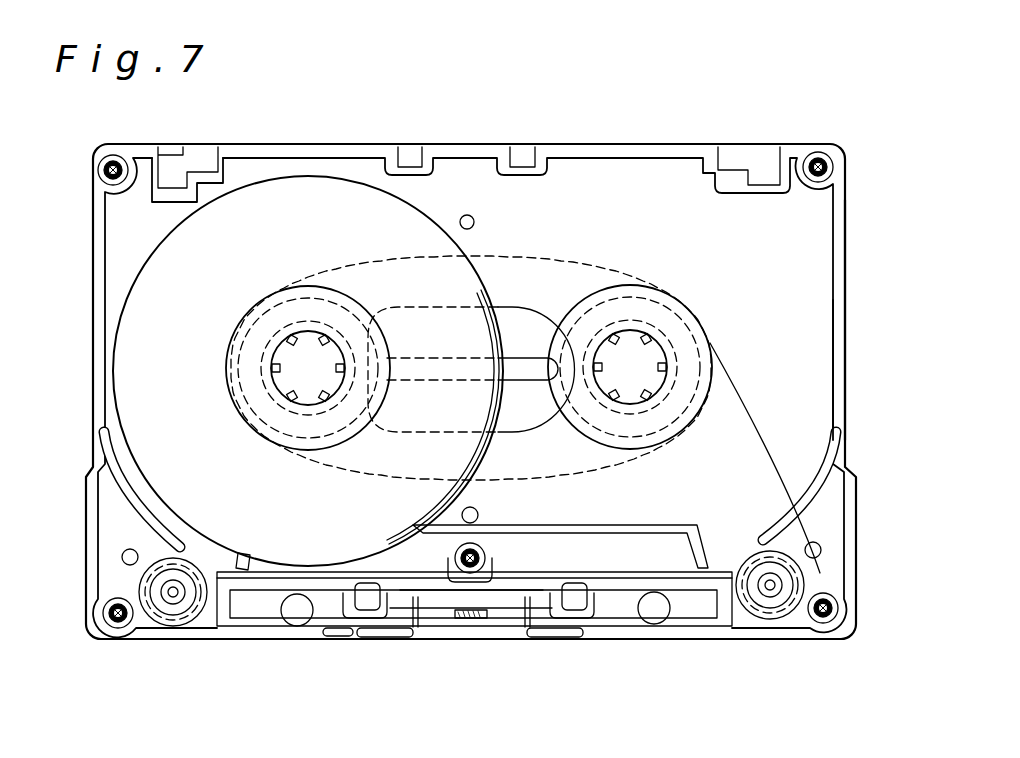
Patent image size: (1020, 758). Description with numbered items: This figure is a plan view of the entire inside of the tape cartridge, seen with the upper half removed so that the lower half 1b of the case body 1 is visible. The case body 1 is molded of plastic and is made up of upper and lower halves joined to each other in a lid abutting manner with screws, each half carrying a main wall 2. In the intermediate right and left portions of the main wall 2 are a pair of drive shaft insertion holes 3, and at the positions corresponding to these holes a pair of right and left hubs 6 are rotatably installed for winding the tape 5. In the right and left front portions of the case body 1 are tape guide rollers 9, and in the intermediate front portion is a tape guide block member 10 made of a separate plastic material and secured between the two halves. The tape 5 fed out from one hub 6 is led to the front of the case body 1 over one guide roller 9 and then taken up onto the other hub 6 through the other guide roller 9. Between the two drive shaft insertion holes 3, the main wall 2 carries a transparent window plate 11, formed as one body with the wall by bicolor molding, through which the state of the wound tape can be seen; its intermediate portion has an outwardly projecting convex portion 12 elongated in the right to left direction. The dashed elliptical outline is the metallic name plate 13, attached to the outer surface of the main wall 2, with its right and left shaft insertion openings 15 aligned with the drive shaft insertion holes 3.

The case body 1 is at (673, 143).
The lower half 1b is at (843, 248).
The main wall 2 is at (808, 380).
The drive shaft insertion hole 3 is at (308, 388).
The tape 5 is at (764, 443).
The hub 6 is at (268, 303).
The tape guide roller 9 is at (170, 608).
The tape guide block member 10 is at (253, 583).
The transparent window plate 11 is at (517, 425).
The convex portion 12 is at (517, 357).
The name plate 13 is at (540, 268).
The shaft insertion opening 15 is at (272, 403).